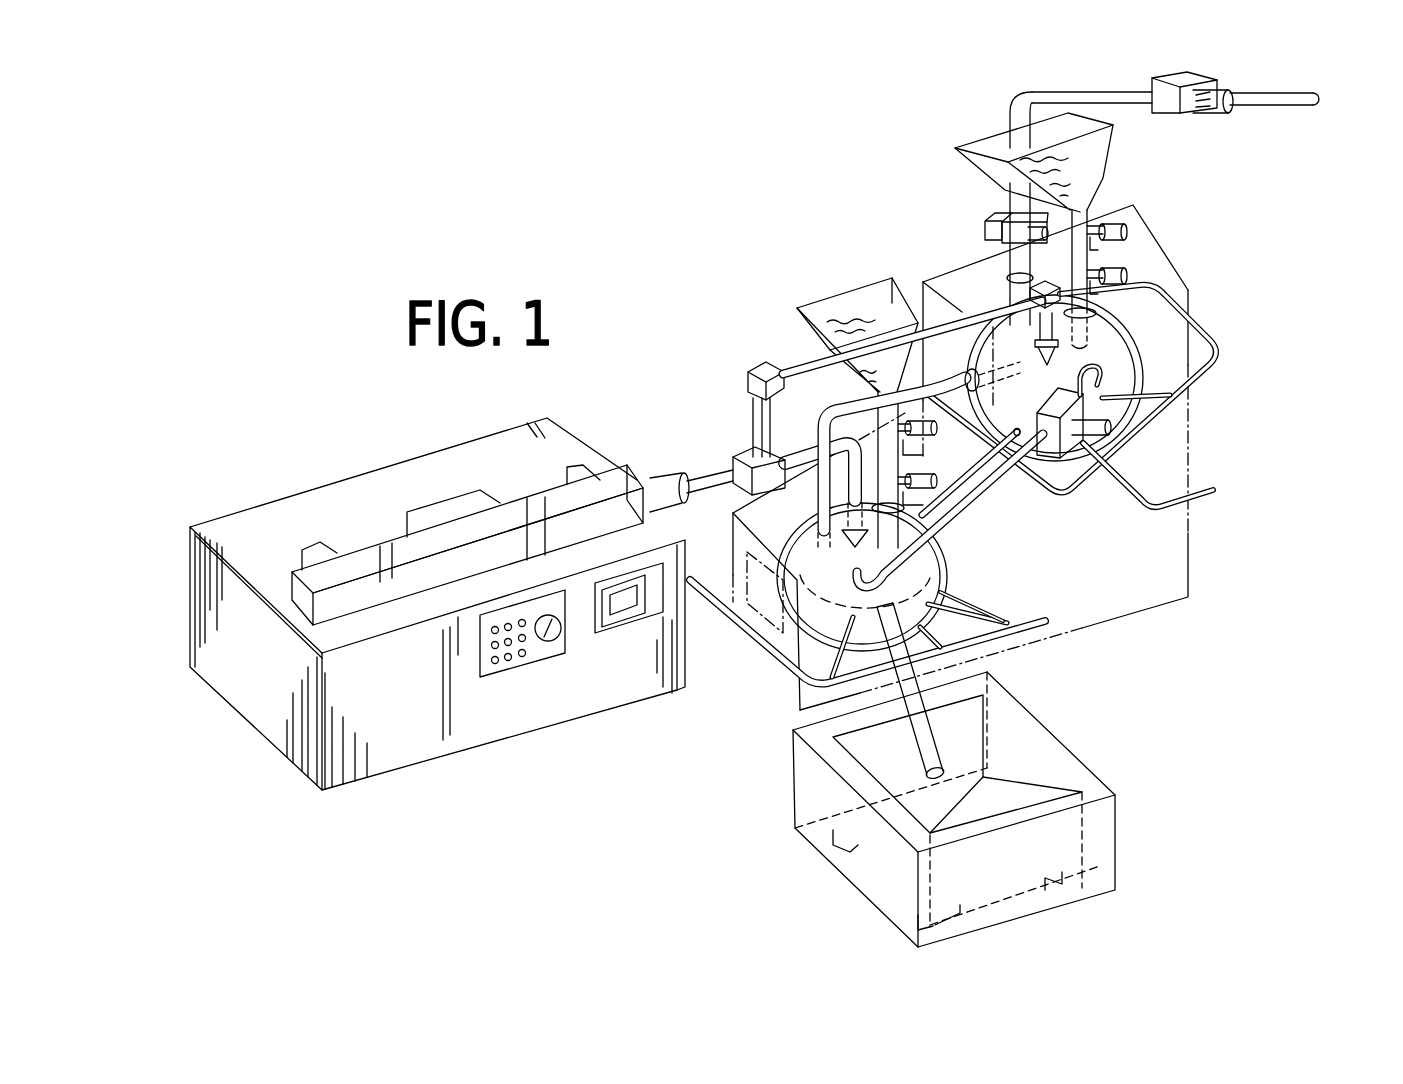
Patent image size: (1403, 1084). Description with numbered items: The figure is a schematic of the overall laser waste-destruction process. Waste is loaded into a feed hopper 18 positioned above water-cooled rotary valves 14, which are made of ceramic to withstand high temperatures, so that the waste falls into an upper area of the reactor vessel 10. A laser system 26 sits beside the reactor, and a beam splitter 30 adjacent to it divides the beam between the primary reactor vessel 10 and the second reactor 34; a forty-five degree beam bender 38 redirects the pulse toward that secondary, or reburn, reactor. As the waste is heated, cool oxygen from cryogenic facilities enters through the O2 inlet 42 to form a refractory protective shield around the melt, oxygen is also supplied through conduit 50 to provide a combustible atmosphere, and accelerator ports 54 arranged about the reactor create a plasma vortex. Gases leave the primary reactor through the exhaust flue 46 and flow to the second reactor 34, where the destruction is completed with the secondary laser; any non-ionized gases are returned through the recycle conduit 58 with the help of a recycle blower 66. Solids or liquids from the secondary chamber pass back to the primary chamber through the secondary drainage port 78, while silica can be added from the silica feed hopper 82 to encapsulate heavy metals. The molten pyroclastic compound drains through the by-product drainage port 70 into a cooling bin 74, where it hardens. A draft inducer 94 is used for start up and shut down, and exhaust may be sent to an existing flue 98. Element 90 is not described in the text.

The reactor vessel 10 is at (800, 668).
The water-cooled rotary valves 14 is at (1113, 227).
The feed hopper 18 is at (850, 284).
The laser system 26 is at (290, 478).
The beam splitter 30 is at (740, 443).
The second reactor 34 is at (1205, 305).
The 45° angle beam bender 38 is at (743, 370).
The O2 inlet 42 is at (1215, 492).
The exhaust flue 46 is at (862, 407).
The conduit 50 is at (756, 671).
The accelerator ports 54 is at (993, 594).
The recycle conduit 58 is at (1012, 448).
The recycle blower 66 is at (1110, 430).
The by-product drainage port 70 is at (987, 672).
The cooling bin 74 is at (1020, 756).
The secondary drainage port 78 is at (970, 532).
The silica feed hopper 82 is at (978, 126).
The clamp block 90 is at (982, 204).
The draft inducer 94 is at (1205, 122).
The existing flue 98 is at (1315, 108).